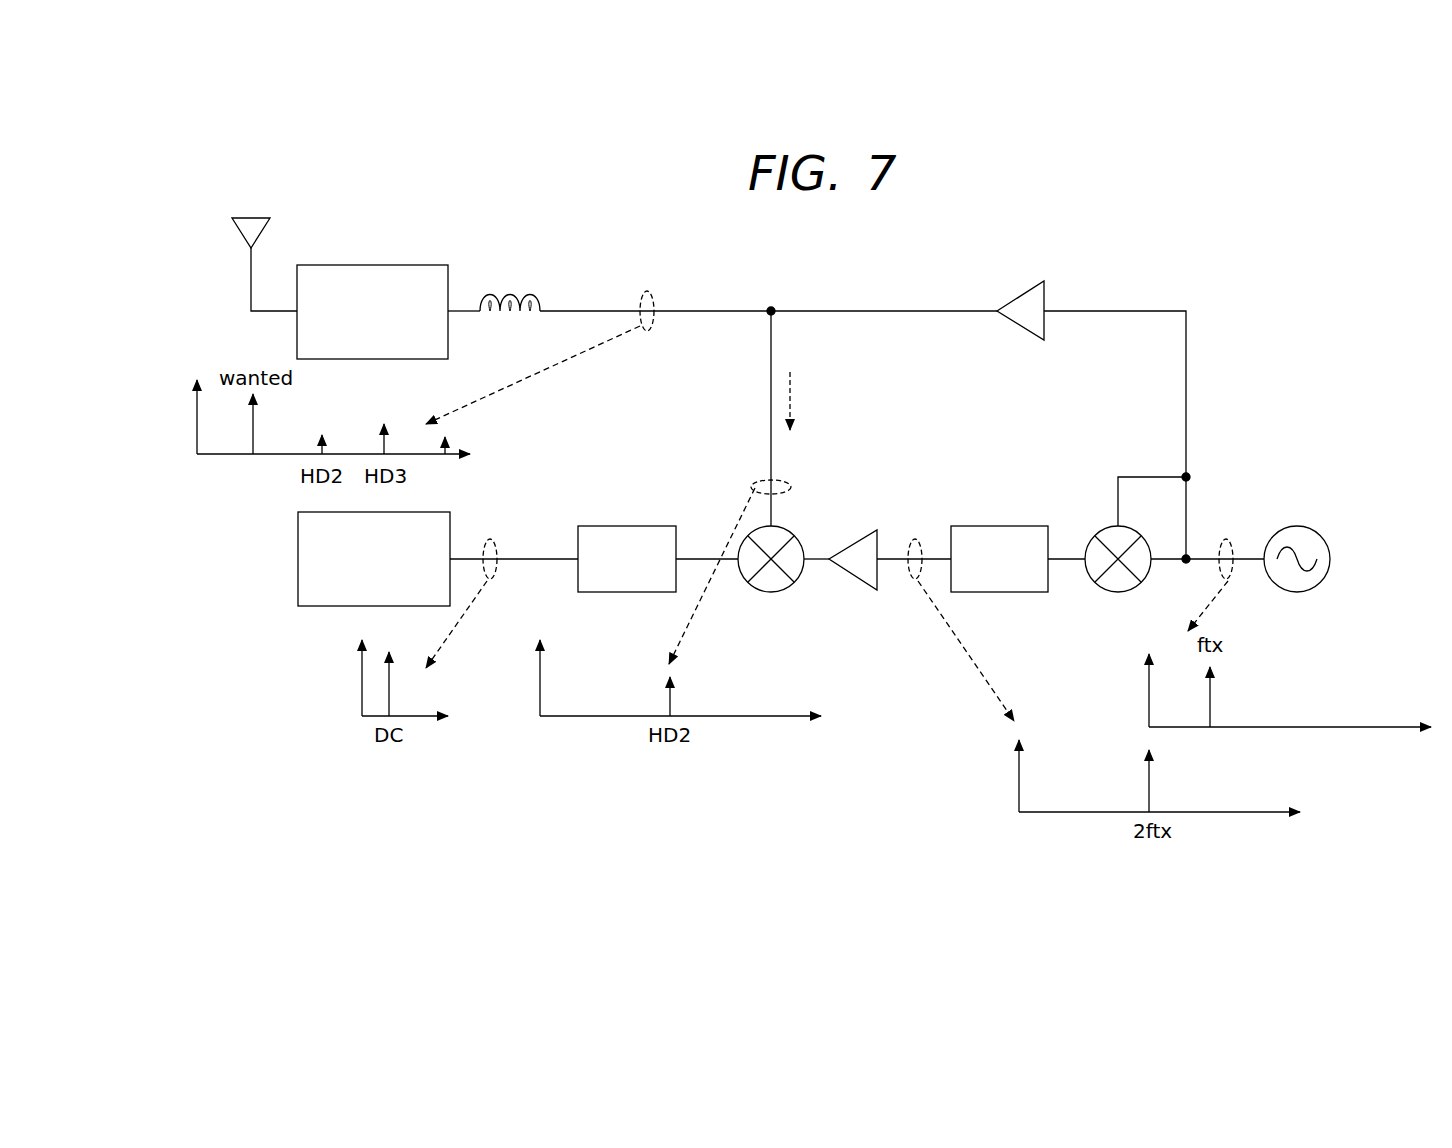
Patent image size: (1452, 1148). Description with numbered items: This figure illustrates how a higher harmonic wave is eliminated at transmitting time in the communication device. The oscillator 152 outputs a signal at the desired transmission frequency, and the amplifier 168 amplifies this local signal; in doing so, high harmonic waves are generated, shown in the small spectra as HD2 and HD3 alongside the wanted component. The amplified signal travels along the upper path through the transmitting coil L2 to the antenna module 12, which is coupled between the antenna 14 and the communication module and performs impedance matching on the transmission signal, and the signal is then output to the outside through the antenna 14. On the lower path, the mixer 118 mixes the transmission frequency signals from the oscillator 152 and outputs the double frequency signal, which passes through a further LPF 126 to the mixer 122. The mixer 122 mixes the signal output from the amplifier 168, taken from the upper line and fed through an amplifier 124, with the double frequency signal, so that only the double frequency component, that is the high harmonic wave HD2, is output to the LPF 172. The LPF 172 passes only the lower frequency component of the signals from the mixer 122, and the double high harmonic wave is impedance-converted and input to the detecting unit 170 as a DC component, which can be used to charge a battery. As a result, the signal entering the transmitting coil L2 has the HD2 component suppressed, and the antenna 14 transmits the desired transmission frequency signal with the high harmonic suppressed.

The antenna 14 is at (255, 218).
The antenna module 12 is at (407, 265).
The transmitting coil L2 is at (513, 294).
The amplifier 168 is at (1023, 330).
The detecting unit 170 is at (298, 540).
The LPF 172 is at (646, 526).
The mixer 122 is at (773, 592).
The amplifier 124 is at (851, 576).
The low pass filter 126 is at (1011, 526).
The mixer 118 is at (1106, 592).
The oscillator 152 is at (1288, 592).